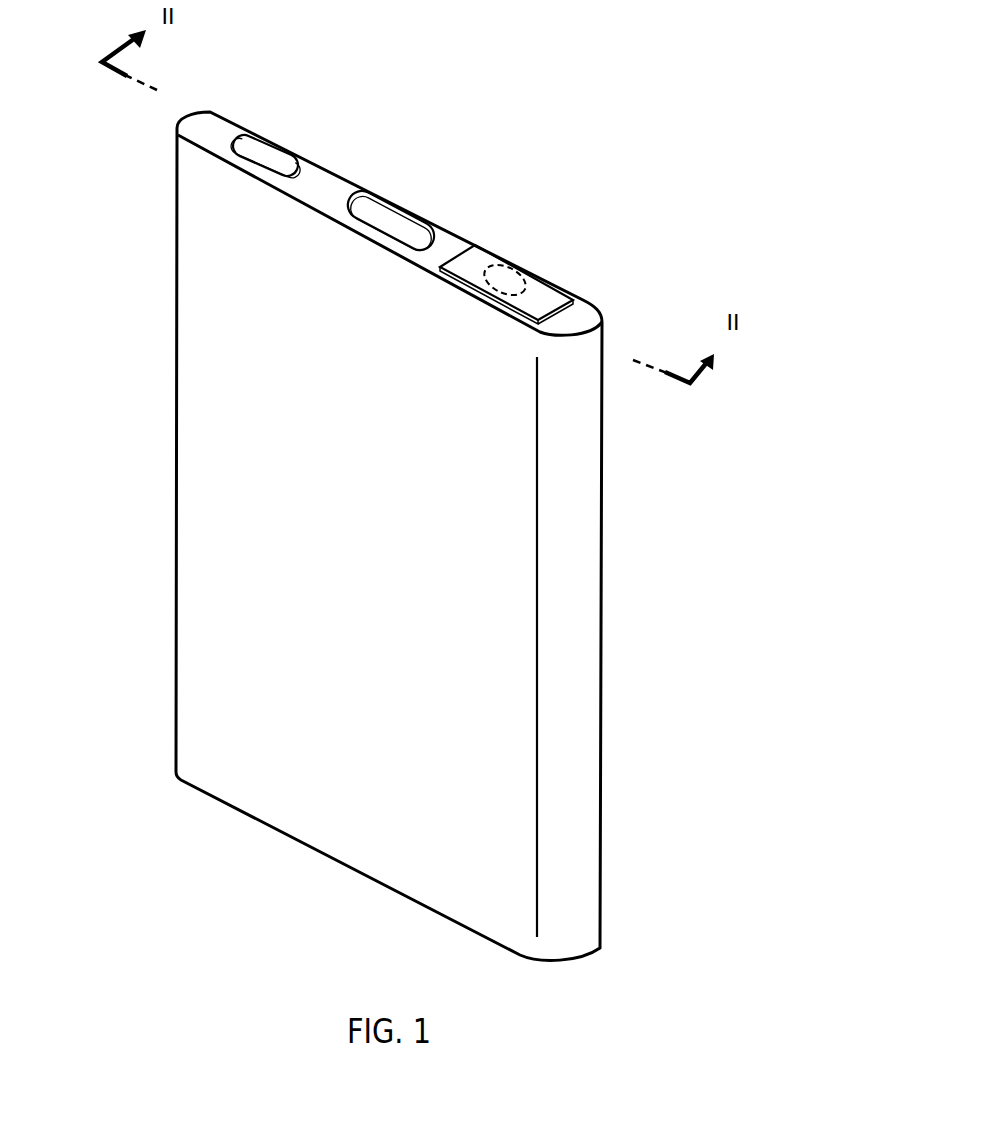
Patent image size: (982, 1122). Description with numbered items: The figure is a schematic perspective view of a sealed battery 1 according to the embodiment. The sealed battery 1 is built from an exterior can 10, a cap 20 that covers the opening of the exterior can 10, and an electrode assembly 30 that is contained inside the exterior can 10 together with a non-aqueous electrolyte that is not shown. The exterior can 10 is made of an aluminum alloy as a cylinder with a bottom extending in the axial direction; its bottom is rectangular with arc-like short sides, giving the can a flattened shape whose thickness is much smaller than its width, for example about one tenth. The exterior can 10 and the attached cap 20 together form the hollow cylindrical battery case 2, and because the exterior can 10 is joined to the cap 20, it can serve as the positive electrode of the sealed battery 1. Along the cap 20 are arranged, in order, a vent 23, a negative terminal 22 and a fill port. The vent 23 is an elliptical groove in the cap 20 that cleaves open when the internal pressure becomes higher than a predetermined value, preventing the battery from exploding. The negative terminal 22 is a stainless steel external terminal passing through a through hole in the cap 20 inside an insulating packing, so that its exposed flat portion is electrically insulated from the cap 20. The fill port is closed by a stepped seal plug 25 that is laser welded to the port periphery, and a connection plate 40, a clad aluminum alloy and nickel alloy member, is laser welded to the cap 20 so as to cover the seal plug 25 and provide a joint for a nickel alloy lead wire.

The sealed battery 1 is at (585, 125).
The battery case 2 is at (606, 633).
The exterior can 10 is at (578, 842).
The cap 20 is at (327, 173).
The negative terminal 22 is at (392, 212).
The vent 23 is at (257, 147).
The seal plug 25 is at (518, 260).
The electrode assembly 30 is at (285, 472).
The connection plate 40 is at (550, 297).